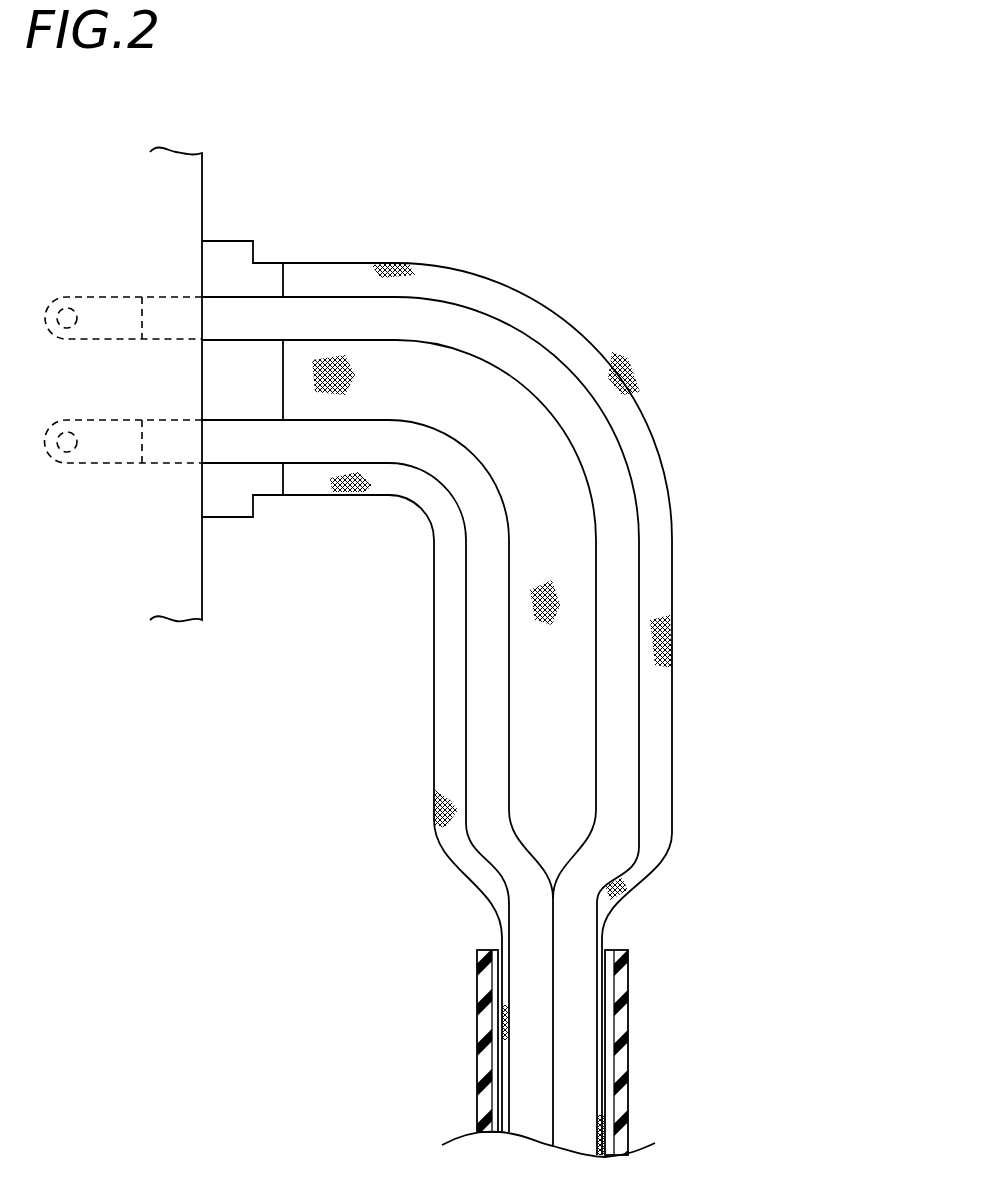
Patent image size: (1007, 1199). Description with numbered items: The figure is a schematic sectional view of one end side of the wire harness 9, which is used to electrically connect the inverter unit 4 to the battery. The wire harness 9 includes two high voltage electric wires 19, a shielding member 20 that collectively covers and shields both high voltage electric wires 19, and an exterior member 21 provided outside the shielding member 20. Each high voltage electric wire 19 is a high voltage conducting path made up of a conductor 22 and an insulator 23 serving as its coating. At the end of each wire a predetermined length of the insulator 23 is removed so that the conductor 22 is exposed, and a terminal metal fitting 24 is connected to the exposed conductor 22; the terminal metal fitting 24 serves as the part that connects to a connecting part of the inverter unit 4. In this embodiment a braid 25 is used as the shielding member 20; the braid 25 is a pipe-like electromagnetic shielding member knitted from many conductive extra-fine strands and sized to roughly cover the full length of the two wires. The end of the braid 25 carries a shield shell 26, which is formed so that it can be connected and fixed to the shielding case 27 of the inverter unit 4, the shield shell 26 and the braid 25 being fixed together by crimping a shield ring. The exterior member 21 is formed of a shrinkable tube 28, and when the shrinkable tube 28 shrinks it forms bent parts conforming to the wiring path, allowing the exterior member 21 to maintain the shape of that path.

The inverter unit 4 is at (182, 173).
The shielding case 27 is at (203, 181).
The shield shell 26 is at (230, 250).
The terminal metal fitting 24 is at (92, 307).
The wire harness 9 is at (781, 365).
The shielding member 20 is at (657, 404).
The high voltage electric wire 19 is at (477, 698).
The insulator 23 is at (477, 737).
The conductor 22 is at (483, 766).
The braid 25 is at (673, 633).
The exterior member 21 is at (635, 1088).
The shrinkable tube 28 is at (478, 1088).